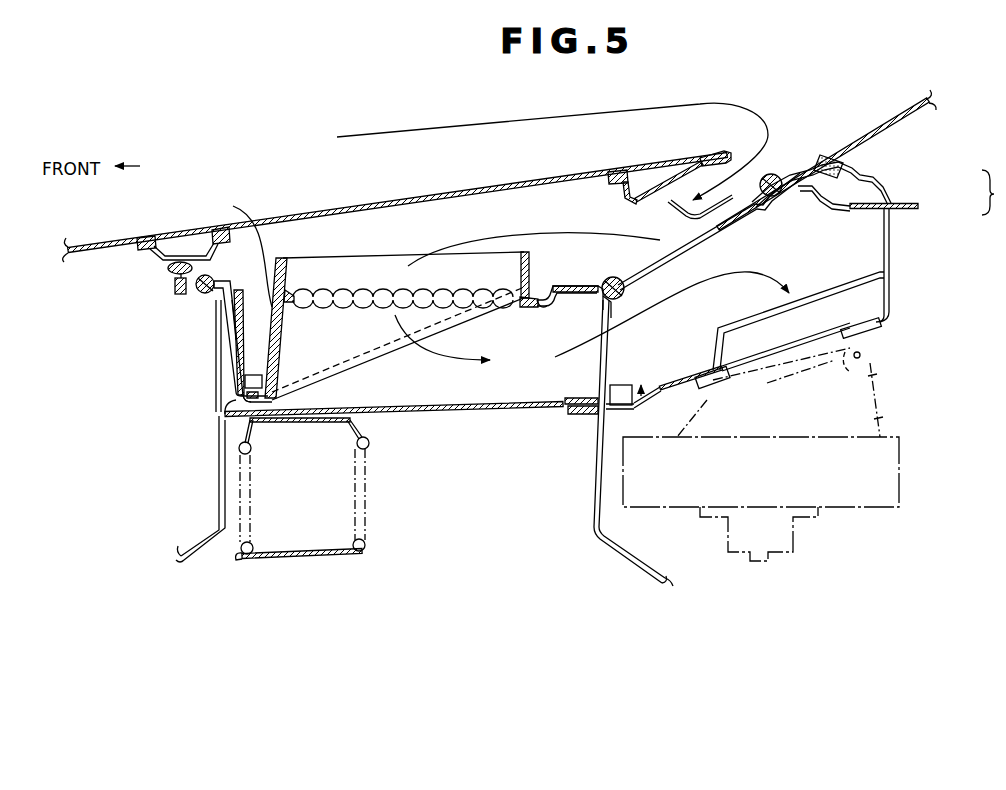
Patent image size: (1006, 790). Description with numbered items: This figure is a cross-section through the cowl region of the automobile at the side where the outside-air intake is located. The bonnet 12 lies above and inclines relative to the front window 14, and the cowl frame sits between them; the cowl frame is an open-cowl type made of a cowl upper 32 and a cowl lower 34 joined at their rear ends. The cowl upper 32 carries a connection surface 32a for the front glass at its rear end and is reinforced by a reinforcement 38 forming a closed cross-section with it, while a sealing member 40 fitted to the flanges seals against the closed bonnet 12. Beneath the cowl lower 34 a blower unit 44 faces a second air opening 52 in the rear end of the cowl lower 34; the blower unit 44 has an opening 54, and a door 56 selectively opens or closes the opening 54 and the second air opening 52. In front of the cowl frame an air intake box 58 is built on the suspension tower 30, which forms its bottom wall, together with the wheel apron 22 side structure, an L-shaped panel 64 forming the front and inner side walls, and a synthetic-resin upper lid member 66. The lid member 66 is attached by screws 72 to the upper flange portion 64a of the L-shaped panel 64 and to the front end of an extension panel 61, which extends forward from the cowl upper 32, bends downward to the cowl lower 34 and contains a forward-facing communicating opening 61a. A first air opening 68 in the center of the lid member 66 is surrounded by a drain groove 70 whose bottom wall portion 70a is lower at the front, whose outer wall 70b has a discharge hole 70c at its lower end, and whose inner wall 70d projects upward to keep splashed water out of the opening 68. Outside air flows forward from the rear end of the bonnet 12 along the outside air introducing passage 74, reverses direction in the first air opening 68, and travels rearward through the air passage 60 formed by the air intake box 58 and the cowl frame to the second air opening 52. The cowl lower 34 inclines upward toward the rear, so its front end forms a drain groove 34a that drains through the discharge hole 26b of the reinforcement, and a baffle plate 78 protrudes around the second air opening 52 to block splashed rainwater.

The bonnet 12 is at (437, 196).
The front window 14 is at (882, 118).
The wheel apron 22 is at (628, 565).
The discharge hole 26b is at (620, 385).
The suspension tower 30 is at (472, 412).
The cowl upper 32 is at (905, 186).
The connection surface 32a is at (845, 167).
The cowl lower 34 is at (898, 236).
The drain groove 34a is at (598, 420).
The reinforcement 38 is at (840, 206).
The sealing member 40 is at (170, 272).
The blower unit 44 is at (901, 473).
The second air opening 52 is at (880, 335).
The opening 54 is at (878, 395).
The door 56 is at (792, 374).
The air intake box 58 is at (416, 404).
The air passage 60 is at (540, 359).
The extension panel 61 is at (676, 248).
The communicating opening 61a is at (612, 320).
The L-shaped panel 64 is at (215, 348).
The upper flange portion 64a is at (186, 295).
The upper lid member 66 is at (273, 247).
The first air opening 68 is at (331, 274).
The drain groove 70 is at (246, 371).
The bottom wall portion 70a is at (243, 398).
The outer wall 70b is at (232, 336).
The discharge hole 70c is at (244, 382).
The inner wall 70d is at (234, 247).
The screws 72 is at (210, 280).
The outside air introducing passage 74 is at (590, 259).
The baffle plate 78 is at (850, 286).